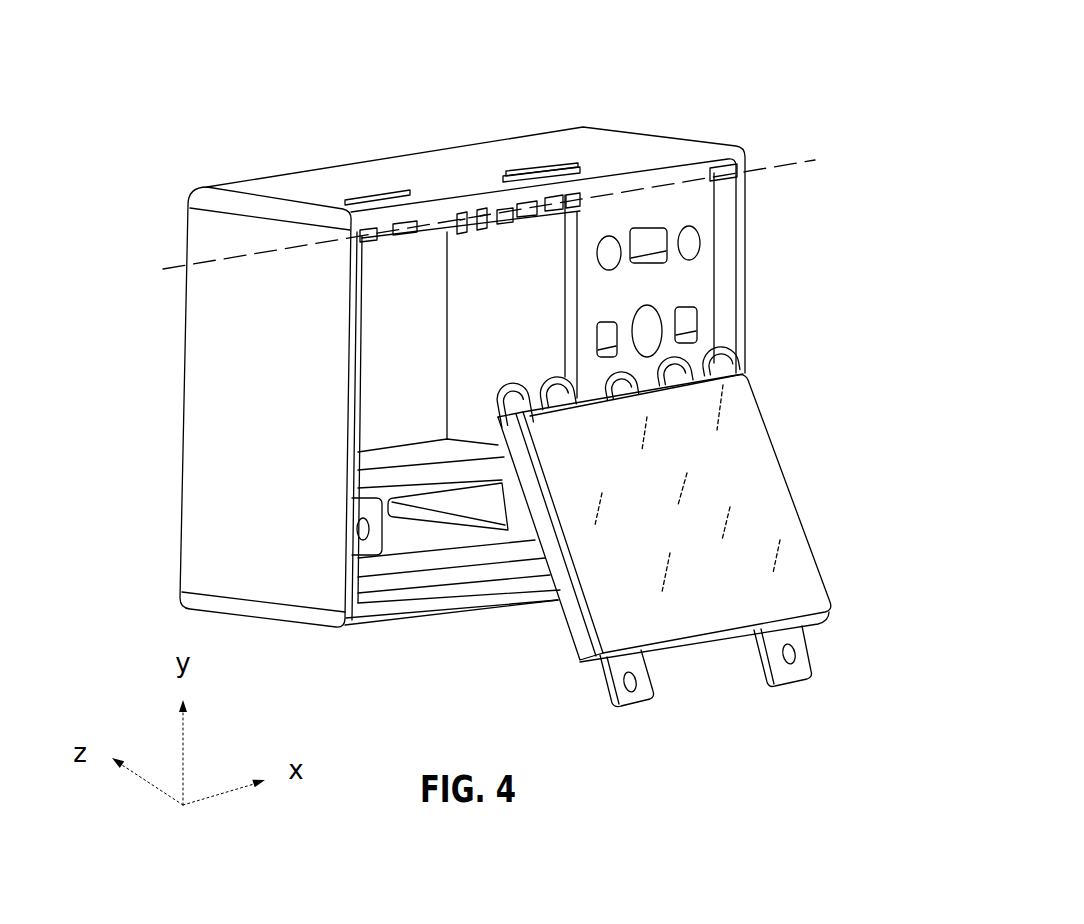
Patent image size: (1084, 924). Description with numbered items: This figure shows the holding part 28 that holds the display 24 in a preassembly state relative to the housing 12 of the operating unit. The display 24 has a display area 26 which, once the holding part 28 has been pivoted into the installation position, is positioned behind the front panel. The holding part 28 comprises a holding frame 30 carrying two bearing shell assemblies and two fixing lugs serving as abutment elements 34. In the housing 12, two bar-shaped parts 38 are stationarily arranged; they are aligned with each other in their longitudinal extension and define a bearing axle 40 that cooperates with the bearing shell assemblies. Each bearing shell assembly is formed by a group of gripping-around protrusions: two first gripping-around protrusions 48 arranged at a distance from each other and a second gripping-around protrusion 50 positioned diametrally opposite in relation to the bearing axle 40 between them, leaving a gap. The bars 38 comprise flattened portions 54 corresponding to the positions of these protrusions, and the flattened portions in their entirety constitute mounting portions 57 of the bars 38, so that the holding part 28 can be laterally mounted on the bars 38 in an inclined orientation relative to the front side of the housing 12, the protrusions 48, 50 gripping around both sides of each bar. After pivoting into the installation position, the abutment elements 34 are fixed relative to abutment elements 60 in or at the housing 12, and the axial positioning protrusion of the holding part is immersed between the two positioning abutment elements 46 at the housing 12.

The housing 12 is at (593, 147).
The display 24 is at (712, 589).
The display area 26 is at (767, 530).
The holding part 28 is at (750, 718).
The holding frame 30 is at (572, 628).
The abutment elements 34 is at (640, 690).
The bar-shaped parts 38 is at (350, 262).
The bearing axle 40 is at (232, 258).
The positioning abutment elements 46 is at (405, 228).
The first gripping-around protrusions 48 is at (680, 370).
The second gripping-around protrusion 50 is at (488, 430).
The flattened portions 54 is at (350, 230).
The mounting portions 57 is at (388, 266).
The abutment elements 60 is at (345, 577).